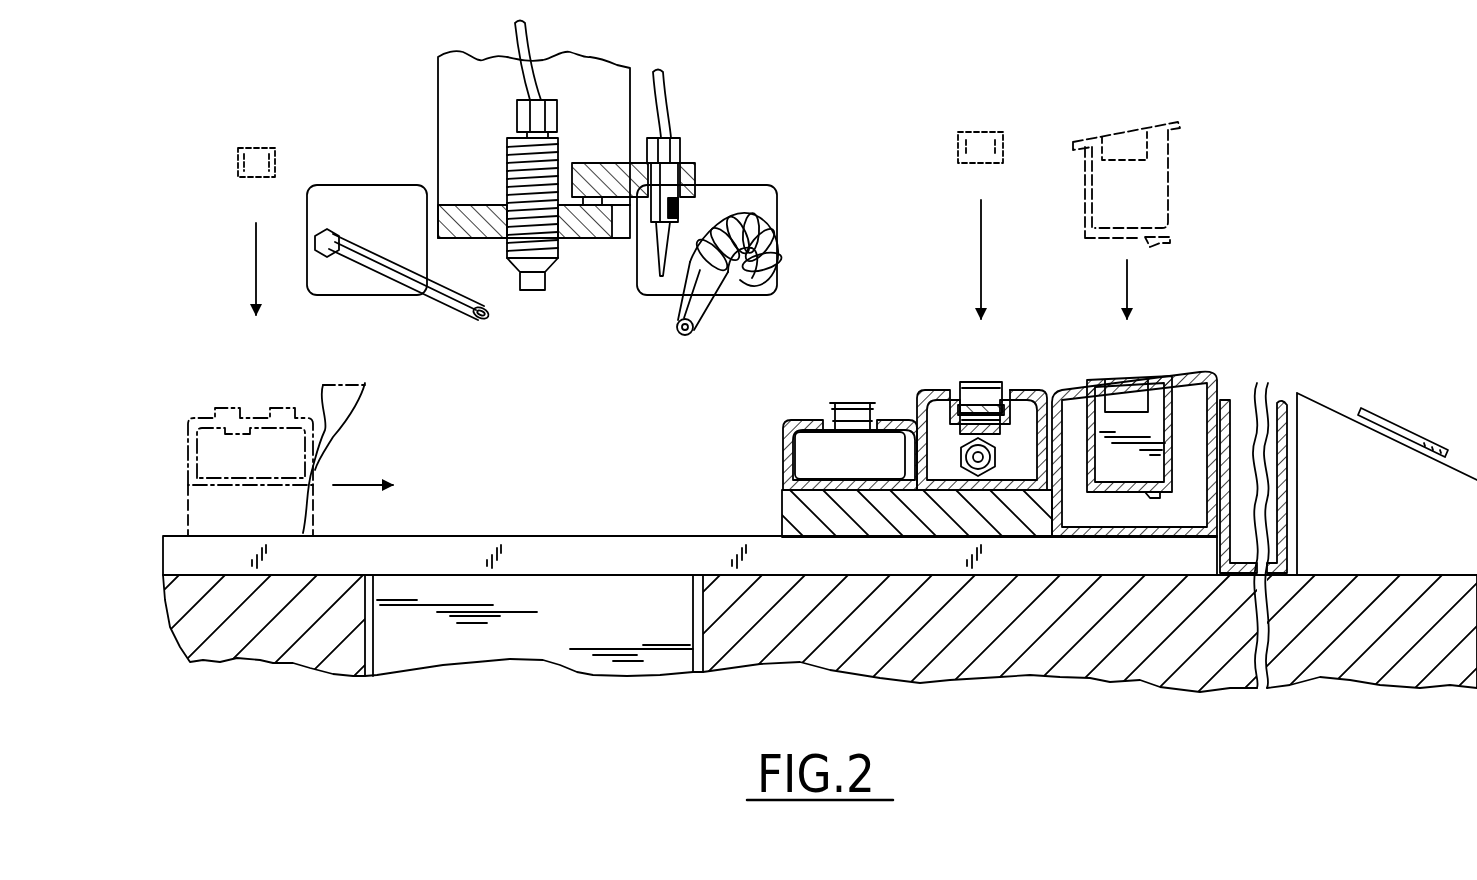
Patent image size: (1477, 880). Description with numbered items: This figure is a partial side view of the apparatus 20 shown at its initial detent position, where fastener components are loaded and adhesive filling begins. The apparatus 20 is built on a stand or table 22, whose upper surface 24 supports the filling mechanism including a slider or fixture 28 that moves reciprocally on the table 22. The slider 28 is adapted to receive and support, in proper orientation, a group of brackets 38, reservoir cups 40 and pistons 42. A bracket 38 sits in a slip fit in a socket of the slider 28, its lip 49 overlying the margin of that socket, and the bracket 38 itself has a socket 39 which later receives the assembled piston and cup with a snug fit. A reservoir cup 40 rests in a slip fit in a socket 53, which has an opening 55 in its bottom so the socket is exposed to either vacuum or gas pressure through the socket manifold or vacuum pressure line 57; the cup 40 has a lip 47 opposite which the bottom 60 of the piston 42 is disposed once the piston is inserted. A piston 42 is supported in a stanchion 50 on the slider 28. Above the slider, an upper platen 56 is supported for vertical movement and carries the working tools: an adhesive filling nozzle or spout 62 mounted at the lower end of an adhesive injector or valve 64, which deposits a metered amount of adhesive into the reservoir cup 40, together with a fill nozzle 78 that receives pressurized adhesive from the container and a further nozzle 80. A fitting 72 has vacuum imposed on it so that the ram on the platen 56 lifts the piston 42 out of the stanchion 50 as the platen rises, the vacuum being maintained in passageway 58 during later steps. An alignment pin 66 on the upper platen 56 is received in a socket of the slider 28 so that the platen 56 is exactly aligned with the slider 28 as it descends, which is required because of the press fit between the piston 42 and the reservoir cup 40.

The apparatus 20 is at (1230, 310).
The stand or table 22 is at (483, 545).
The upper surface 24 is at (585, 535).
The slider or fixture 28 is at (777, 504).
The fastener body or bracket 38 is at (1165, 152).
The socket of bracket 39 is at (1140, 381).
The reservoir cup 40 is at (957, 150).
The piston 42 is at (835, 400).
The lip of reservoir cup 47 is at (1003, 397).
The lip of bracket 49 is at (1163, 120).
The stanchion 50 is at (818, 418).
The socket for reservoir cup 53 is at (1010, 400).
The opening in bottom of socket 55 is at (970, 424).
The upper platen 56 is at (593, 200).
The socket manifold or vacuum pressure line 57 is at (935, 461).
The passageway 58 is at (502, 150).
The bottom of piston 60 is at (983, 382).
The adhesive filling nozzle or spout 62 is at (662, 252).
The adhesive injector or valve 64 is at (678, 205).
The alignment pin 66 is at (1391, 428).
The fitting 72 is at (520, 115).
The fill nozzle 78 is at (770, 230).
The nozzle 80 is at (376, 257).